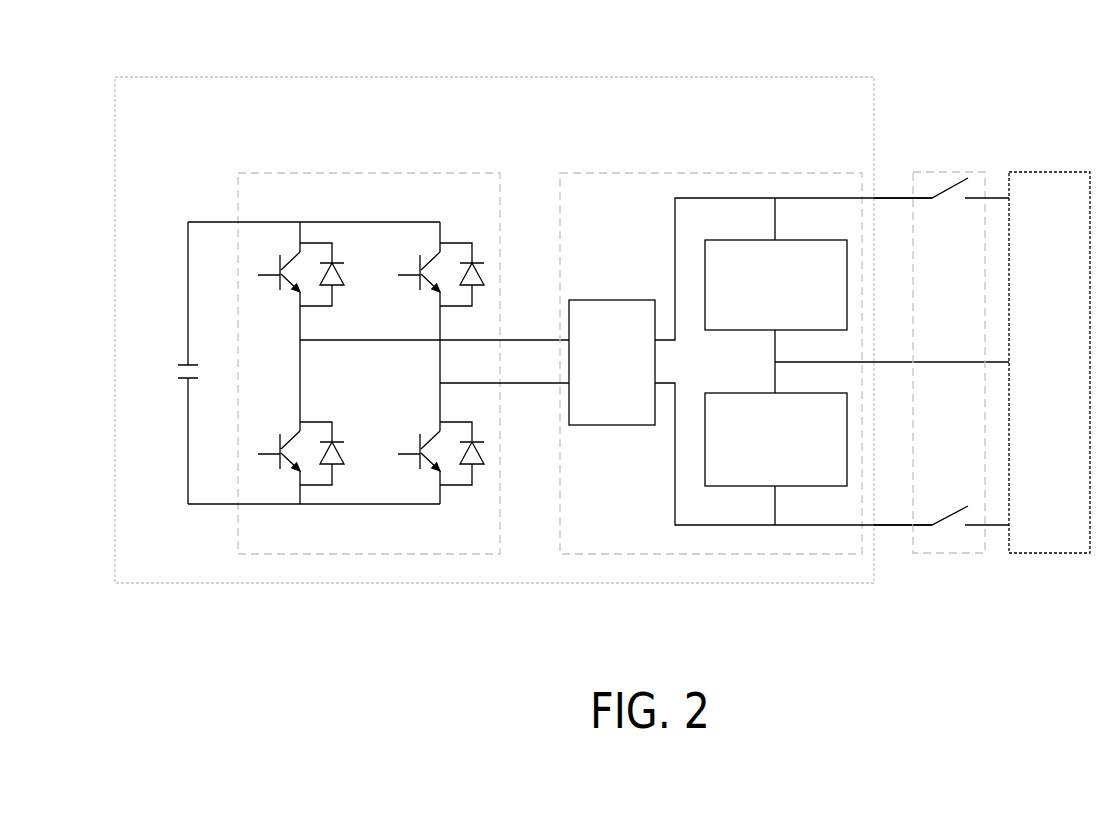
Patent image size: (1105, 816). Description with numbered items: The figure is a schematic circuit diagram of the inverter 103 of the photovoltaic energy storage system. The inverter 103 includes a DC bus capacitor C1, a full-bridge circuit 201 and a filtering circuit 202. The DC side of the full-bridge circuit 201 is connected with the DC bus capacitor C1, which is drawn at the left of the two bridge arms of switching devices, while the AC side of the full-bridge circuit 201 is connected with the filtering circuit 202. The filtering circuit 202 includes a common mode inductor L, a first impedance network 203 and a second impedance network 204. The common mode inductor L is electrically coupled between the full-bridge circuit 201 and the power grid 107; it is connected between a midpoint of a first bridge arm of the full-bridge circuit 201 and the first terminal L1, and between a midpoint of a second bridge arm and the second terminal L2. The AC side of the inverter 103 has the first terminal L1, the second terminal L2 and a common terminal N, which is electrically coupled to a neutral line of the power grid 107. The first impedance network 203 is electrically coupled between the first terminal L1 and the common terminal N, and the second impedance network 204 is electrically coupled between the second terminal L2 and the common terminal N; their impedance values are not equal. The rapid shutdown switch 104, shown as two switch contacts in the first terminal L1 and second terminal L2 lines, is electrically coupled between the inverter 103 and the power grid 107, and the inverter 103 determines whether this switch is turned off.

The inverter 103 is at (525, 77).
The full-bridge circuit 201 is at (386, 172).
The filtering circuit 202 is at (730, 172).
The first impedance network 203 is at (750, 238).
The second impedance network 204 is at (748, 393).
The rapid shutdown switch 104 is at (945, 172).
The power grid 107 is at (1038, 172).
The DC bus capacitor C1 is at (170, 363).
The common mode inductor L is at (612, 299).
The first terminal L1 is at (898, 197).
The second terminal L2 is at (897, 528).
The common terminal N is at (890, 360).